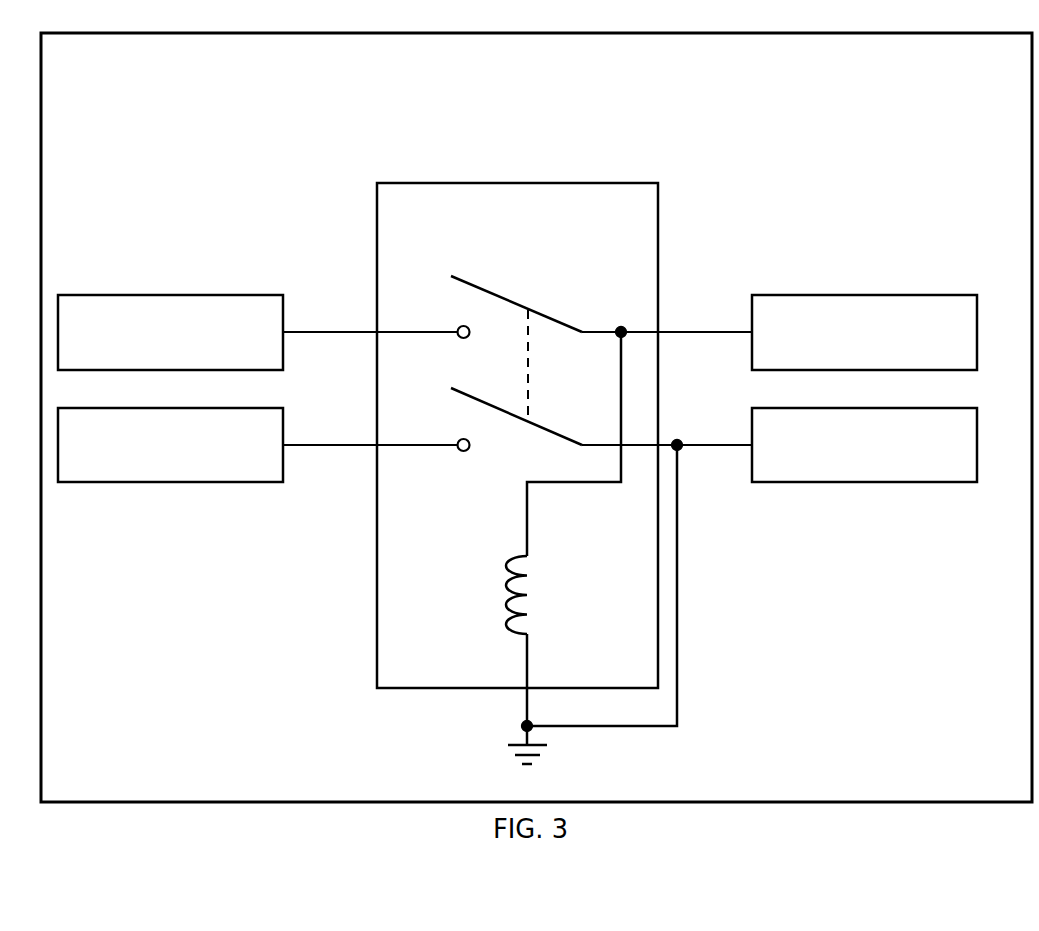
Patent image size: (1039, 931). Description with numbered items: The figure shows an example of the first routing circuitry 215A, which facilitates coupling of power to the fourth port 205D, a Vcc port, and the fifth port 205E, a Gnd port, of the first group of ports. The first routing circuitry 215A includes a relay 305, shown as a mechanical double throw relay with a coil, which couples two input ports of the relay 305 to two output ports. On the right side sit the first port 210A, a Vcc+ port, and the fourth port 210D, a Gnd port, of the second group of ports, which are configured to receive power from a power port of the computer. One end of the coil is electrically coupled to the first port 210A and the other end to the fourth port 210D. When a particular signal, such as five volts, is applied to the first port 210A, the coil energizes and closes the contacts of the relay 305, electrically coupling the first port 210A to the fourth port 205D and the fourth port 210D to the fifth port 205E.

The first routing circuitry 215A is at (510, 100).
The relay 305 is at (499, 250).
The fourth port 205D is at (143, 360).
The fifth port 205E is at (144, 472).
The first port 210A is at (837, 360).
The fourth port 210D is at (837, 472).